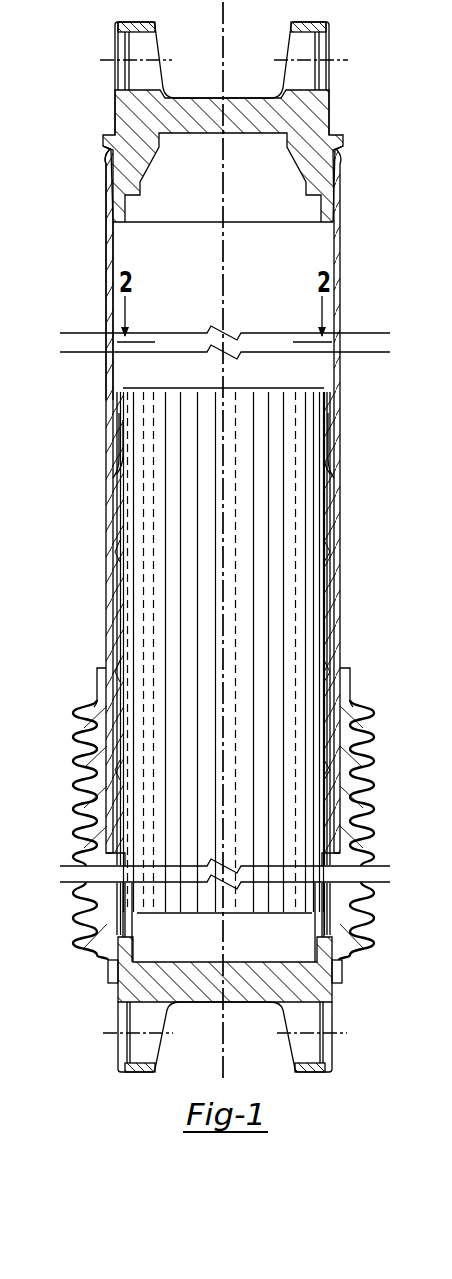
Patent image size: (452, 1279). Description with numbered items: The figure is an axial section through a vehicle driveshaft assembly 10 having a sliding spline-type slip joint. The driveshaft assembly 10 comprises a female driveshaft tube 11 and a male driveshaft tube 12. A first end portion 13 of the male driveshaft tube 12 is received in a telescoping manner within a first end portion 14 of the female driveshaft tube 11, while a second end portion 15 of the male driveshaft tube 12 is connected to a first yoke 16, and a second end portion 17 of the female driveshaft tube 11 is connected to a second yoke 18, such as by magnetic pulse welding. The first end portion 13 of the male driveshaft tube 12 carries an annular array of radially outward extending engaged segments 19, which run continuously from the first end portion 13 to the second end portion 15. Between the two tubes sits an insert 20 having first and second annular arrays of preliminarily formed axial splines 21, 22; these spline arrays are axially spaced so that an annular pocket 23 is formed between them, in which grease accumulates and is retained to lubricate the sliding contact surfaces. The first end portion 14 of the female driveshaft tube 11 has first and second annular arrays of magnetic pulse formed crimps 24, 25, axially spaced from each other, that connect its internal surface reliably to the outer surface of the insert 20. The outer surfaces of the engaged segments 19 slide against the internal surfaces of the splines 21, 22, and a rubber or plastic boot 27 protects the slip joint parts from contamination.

The driveshaft assembly 10 is at (369, 58).
The female driveshaft tube 11 is at (345, 250).
The male driveshaft tube 12 is at (249, 926).
The first end portion of the male driveshaft tube 13 is at (171, 613).
The first end portion of the female driveshaft tube 14 is at (104, 571).
The second end portion of the male driveshaft tube 15 is at (119, 926).
The first yoke 16 is at (203, 988).
The second end portion of the female driveshaft tube 17 is at (104, 239).
The second yoke 18 is at (200, 104).
The engaged segments 19 is at (138, 393).
The insert 20 is at (327, 418).
The first annular array of axial splines 21 is at (328, 685).
The second annular array of axial splines 22 is at (330, 575).
The annular pocket 23 is at (321, 635).
The first annular array of magnetic pulse formed crimps 24 is at (341, 775).
The second annular array of magnetic pulse formed crimps 25 is at (345, 502).
The boot 27 is at (80, 827).